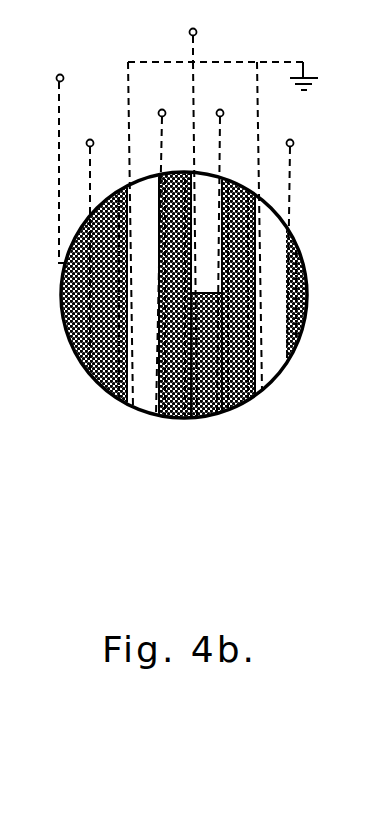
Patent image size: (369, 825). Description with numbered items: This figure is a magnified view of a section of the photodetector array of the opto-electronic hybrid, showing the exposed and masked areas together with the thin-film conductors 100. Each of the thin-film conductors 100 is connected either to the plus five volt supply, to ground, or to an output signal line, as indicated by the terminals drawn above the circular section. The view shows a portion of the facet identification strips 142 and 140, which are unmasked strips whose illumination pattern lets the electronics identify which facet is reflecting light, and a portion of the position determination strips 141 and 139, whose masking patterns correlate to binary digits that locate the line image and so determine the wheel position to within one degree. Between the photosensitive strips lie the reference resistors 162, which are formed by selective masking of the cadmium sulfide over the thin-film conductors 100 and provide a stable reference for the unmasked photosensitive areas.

The thin-film conductors 100 is at (260, 317).
The position determination strip 139 is at (70, 340).
The facet identification strip 140 is at (145, 412).
The position determination strip 141 is at (205, 416).
The facet identification strip 142 is at (272, 353).
The reference resistors 162 is at (109, 393).